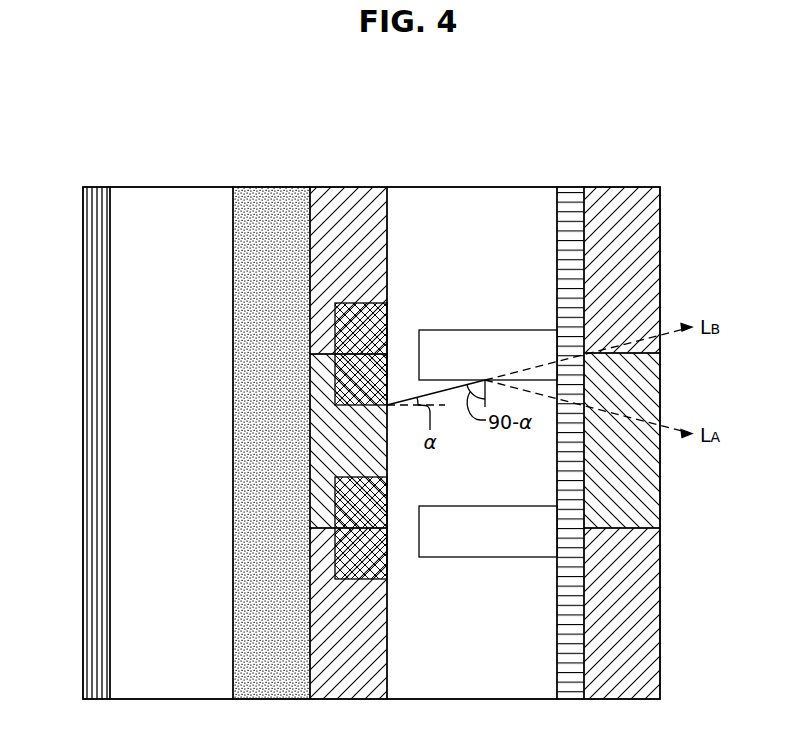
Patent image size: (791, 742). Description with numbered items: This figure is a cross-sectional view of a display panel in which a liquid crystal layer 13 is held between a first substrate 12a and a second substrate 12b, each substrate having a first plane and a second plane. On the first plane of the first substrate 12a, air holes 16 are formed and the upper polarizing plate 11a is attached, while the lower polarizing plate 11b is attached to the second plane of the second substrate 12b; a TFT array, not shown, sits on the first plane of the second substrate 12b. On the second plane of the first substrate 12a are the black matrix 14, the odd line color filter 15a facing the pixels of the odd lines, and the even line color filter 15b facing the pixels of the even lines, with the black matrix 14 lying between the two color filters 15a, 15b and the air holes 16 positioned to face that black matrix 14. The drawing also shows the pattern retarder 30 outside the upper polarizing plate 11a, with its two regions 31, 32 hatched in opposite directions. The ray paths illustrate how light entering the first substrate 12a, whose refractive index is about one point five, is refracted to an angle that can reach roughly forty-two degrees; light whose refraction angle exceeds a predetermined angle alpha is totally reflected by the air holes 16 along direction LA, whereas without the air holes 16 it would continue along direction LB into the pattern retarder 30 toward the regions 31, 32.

The upper polarizing plate 11a is at (571, 186).
The lower polarizing plate 11b is at (98, 186).
The first substrate 12a is at (475, 186).
The second substrate 12b is at (178, 186).
The liquid crystal layer 13 is at (273, 186).
The black matrix 14 is at (369, 365).
The odd line color filter 15a is at (327, 254).
The even line color filter 15b is at (327, 450).
The air holes 16 is at (469, 365).
The optical member 30 is at (625, 186).
The first light guide portion 31 is at (654, 569).
The second light guide portion 32 is at (652, 377).